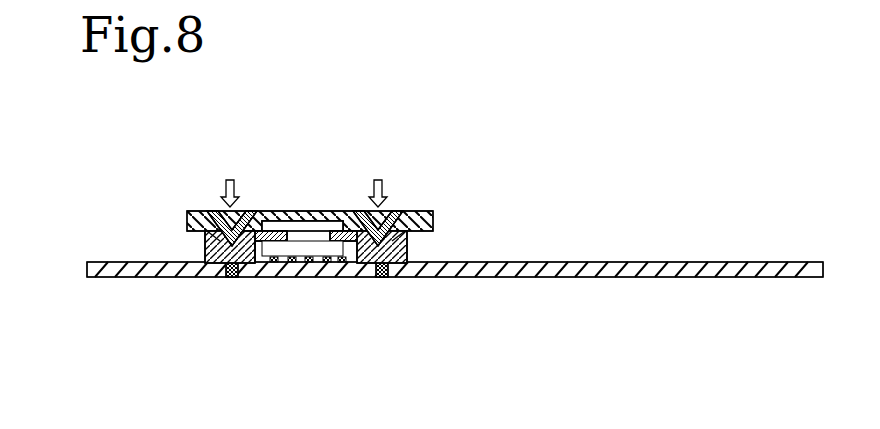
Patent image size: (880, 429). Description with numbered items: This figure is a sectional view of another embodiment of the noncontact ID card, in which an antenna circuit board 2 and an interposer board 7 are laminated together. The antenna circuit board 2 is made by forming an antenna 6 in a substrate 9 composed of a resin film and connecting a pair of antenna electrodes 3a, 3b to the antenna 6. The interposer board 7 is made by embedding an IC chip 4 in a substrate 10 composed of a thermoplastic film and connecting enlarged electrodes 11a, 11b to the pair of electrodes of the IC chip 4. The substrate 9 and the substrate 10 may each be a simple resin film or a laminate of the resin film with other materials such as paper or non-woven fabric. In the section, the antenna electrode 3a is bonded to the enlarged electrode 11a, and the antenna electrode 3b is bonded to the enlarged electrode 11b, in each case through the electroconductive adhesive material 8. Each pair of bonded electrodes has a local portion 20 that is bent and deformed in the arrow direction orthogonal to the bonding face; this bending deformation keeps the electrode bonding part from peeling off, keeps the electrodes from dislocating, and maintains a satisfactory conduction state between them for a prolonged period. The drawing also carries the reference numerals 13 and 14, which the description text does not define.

The antenna circuit board 2 is at (503, 278).
The antenna electrode 3a is at (231, 263).
The antenna electrode 3b is at (380, 272).
The IC chip 4 is at (330, 227).
The antenna 6 is at (324, 262).
The interposer board 7 is at (199, 211).
The electroconductive adhesive material 8 is at (207, 245).
The substrate 9 is at (697, 277).
The substrate 10 is at (280, 222).
The enlarged electrode 11a is at (214, 232).
The enlarged electrode 11b is at (408, 237).
The bump 13 is at (265, 262).
The adhesive 14 is at (270, 247).
The local portion 20 is at (223, 212).